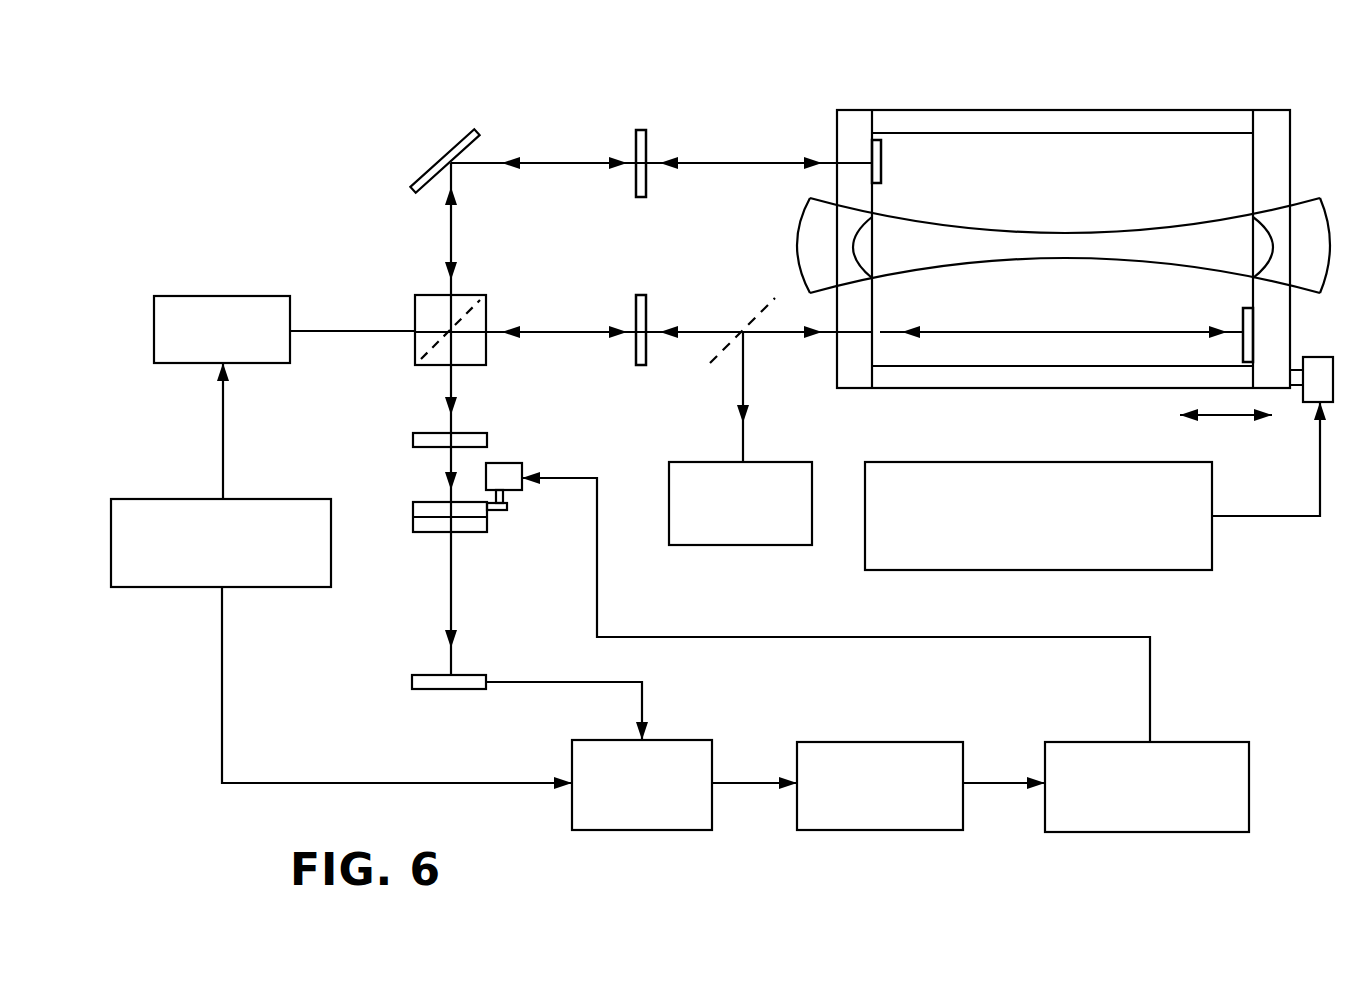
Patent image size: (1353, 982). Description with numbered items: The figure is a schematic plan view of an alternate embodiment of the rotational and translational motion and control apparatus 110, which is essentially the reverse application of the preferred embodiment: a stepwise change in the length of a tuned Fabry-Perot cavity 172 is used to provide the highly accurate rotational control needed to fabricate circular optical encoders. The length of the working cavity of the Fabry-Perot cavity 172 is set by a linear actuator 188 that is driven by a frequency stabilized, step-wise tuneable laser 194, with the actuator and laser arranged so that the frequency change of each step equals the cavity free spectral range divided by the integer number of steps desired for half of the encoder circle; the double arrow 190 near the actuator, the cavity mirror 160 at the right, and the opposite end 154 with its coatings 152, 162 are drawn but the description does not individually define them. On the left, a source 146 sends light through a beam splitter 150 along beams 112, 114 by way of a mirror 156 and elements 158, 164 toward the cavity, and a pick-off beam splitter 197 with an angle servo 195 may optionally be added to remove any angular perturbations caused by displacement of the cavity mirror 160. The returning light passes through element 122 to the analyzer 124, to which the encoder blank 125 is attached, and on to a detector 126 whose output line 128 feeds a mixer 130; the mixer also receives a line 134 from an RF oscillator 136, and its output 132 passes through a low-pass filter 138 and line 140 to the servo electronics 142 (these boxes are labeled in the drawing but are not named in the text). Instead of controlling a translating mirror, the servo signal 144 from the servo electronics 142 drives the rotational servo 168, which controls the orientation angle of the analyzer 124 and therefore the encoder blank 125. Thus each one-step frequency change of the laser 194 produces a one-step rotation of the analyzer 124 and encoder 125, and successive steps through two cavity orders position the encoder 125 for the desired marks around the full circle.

The alternate embodiment motion control apparatus 110 is at (315, 188).
The first beam 112 is at (453, 229).
The second beam 114 is at (573, 330).
The polarizer 122 is at (413, 437).
The analyzer 124 is at (413, 507).
The encoder blank 125 is at (487, 527).
The detector 126 is at (412, 677).
The detector output line 128 is at (643, 695).
The mixer 130 is at (647, 830).
The mixer output line 132 is at (733, 782).
The RF oscillator output line 134 is at (223, 435).
The RF oscillator 136 is at (172, 587).
The low-pass filter 138 is at (873, 830).
The filter output line 140 is at (987, 782).
The servo electronics 142 is at (1126, 832).
The servo signal 144 is at (1150, 648).
The laser source 146 is at (256, 295).
The beam splitter 150 is at (487, 353).
The first mirror coating 152 is at (882, 175).
The first cavity mirror 154 is at (862, 110).
The folding mirror 156 is at (455, 150).
The first lens 158 is at (634, 143).
The cavity mirror 160 is at (1270, 113).
The second mirror coating 162 is at (1242, 317).
The second lens 164 is at (638, 293).
The rotational servo 168 is at (503, 462).
The Fabry-Perot cavity 172 is at (1027, 110).
The linear actuator 188 is at (1310, 357).
The translation direction 190 is at (1222, 420).
The frequency stabilized step-wise tunable laser 194 is at (1008, 460).
The angle servo 195 is at (750, 462).
The beam splitter 197 is at (775, 298).